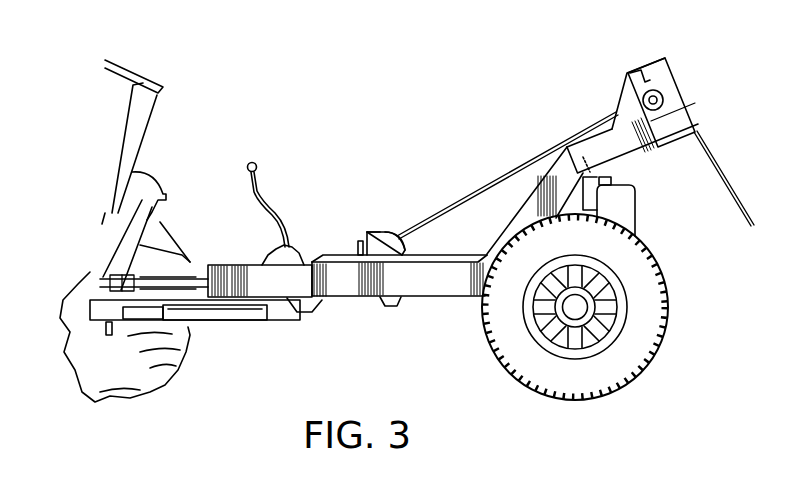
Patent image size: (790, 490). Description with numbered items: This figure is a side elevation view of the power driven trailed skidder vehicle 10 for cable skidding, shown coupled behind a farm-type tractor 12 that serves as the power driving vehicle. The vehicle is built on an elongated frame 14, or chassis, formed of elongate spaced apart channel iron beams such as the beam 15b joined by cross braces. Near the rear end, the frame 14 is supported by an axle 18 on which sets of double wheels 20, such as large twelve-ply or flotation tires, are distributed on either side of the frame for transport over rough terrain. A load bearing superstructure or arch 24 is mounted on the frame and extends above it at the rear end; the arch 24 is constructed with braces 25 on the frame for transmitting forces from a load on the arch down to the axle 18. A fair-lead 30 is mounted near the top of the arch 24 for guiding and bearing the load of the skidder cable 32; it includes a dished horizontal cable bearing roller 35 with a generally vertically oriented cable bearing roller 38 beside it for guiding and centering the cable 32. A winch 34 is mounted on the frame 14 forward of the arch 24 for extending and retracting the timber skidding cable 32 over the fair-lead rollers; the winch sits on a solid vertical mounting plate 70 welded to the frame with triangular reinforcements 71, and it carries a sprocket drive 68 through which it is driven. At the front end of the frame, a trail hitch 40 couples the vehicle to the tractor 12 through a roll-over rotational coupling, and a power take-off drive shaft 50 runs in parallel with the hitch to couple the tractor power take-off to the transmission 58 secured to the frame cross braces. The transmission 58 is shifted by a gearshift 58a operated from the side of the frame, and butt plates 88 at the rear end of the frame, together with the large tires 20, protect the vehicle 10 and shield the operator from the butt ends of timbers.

The trailed skidder vehicle 10 is at (429, 135).
The farm tractor 12 is at (90, 154).
The elongated frame 14 is at (449, 302).
The elongate channel iron beam 15b is at (267, 288).
The axle 18 is at (586, 317).
The double wheels 20 is at (585, 247).
The arch 24 is at (583, 140).
The braces 25 is at (570, 202).
The fair-lead 30 is at (636, 56).
The skidder cable 32 is at (488, 186).
The winch 34 is at (385, 231).
The horizontal cable bearing roller 35 is at (640, 90).
The vertically oriented cable bearing roller 38 is at (668, 82).
The trail hitch 40 is at (225, 325).
The power take-off drive shaft 50 is at (202, 267).
The transmission 58 is at (295, 252).
The gearshift 58a is at (250, 192).
The sprocket drive 68 is at (350, 240).
The vertical mounting plate 70 is at (366, 231).
The triangular reinforcements 71 is at (393, 233).
The butt plates 88 is at (637, 215).